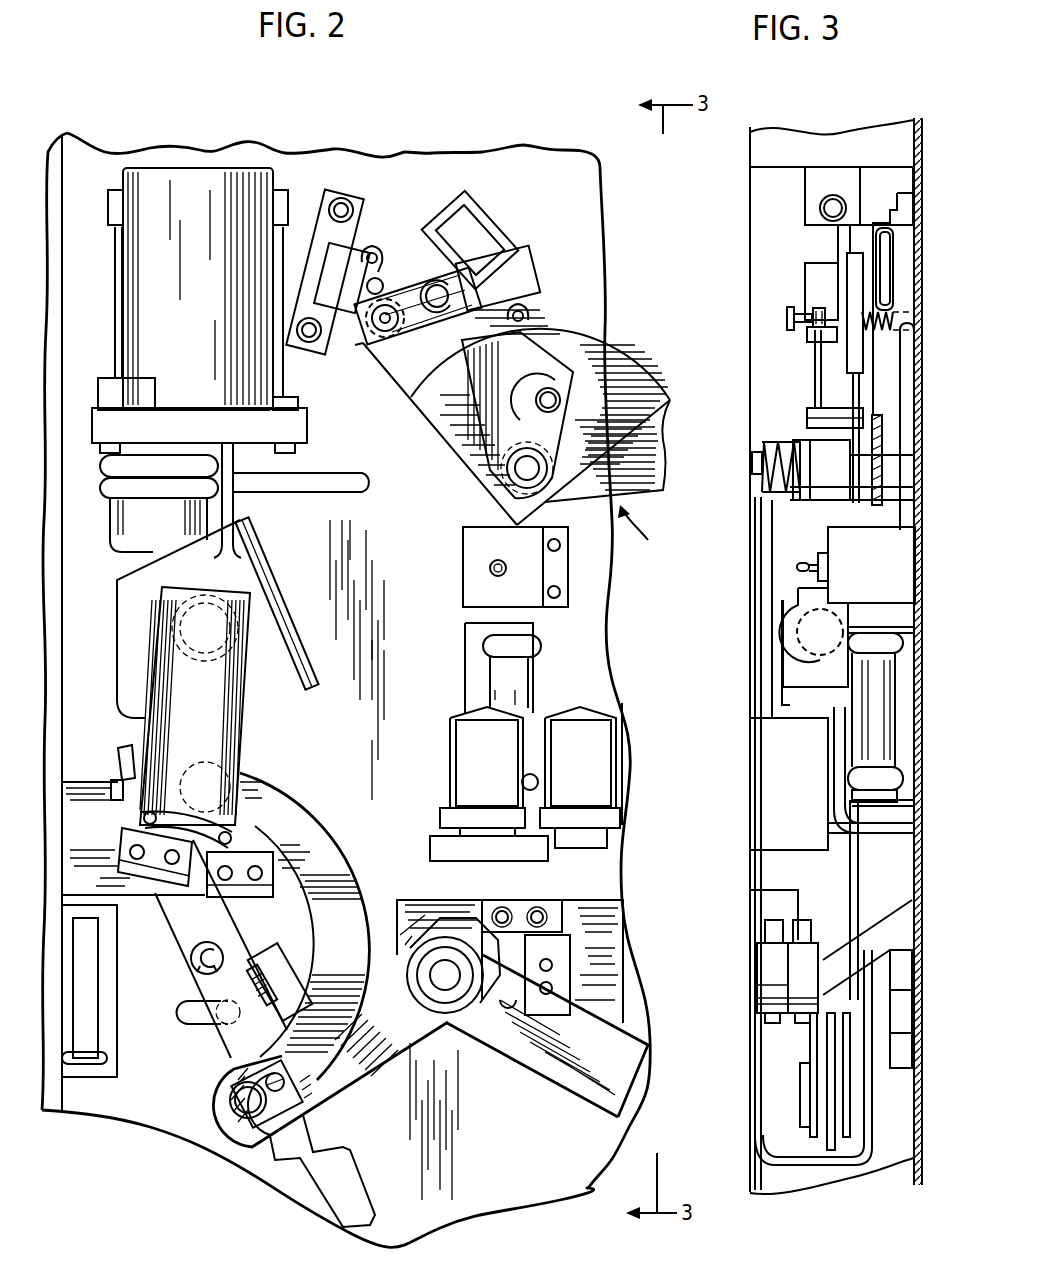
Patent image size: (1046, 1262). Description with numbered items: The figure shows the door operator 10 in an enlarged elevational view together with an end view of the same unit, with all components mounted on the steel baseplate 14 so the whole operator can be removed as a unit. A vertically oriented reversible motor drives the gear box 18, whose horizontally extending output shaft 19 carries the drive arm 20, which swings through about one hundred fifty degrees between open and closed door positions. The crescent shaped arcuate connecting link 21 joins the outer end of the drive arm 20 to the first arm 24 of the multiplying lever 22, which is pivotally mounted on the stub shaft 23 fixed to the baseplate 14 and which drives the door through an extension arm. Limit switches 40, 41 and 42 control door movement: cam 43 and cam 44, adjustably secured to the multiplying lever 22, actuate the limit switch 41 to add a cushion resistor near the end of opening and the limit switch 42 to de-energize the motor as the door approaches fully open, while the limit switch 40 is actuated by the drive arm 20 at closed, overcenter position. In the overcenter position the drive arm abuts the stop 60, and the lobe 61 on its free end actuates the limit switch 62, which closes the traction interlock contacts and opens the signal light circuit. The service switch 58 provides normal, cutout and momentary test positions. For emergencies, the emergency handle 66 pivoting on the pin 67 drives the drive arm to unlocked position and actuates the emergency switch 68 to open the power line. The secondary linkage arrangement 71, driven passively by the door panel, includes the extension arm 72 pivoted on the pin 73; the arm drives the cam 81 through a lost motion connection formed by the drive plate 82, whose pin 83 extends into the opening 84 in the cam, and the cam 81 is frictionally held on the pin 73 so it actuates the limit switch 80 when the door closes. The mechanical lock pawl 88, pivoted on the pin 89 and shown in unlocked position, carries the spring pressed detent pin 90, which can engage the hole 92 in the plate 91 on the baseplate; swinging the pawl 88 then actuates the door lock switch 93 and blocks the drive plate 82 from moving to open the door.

In FIG. 3, the door operator 10 is at (832, 116).
In FIG. 2, the baseplate 14 is at (532, 1182).
In FIG. 3, the baseplate 14 is at (912, 559).
In FIG. 2, the gear box 18 is at (285, 680).
In FIG. 2, the output shaft 19 is at (250, 633).
In FIG. 2, the drive arm 20 is at (228, 735).
In FIG. 2, the arcuate connecting link 21 is at (320, 848).
In FIG. 2, the multiplying lever 22 is at (521, 1065).
In FIG. 2, the stub shaft 23 is at (445, 985).
In FIG. 2, the first arm 24 is at (360, 1073).
In FIG. 2, the limit switch 40 is at (157, 862).
In FIG. 2, the limit switch 41 is at (555, 975).
In FIG. 3, the limit switch 41 is at (760, 1000).
In FIG. 2, the limit switch 42 is at (526, 973).
In FIG. 3, the limit switch 42 is at (800, 1020).
In FIG. 2, the cam 43 is at (432, 920).
In FIG. 2, the cam 44 is at (440, 935).
In FIG. 2, the service switch 58 is at (492, 572).
In FIG. 3, the service switch 58 is at (818, 555).
In FIG. 2, the stop 60 is at (128, 755).
In FIG. 2, the lobe 61 is at (214, 829).
In FIG. 2, the limit switch 62 is at (240, 878).
In FIG. 2, the emergency handle 66 is at (358, 1158).
In FIG. 2, the pin 67 is at (202, 958).
In FIG. 2, the emergency switch 68 is at (236, 1056).
In FIG. 2, the secondary linkage arrangement 71 is at (639, 530).
In FIG. 2, the extension arm 72 is at (647, 490).
In FIG. 2, the pin 73 is at (515, 472).
In FIG. 2, the limit switch 80 is at (513, 290).
In FIG. 3, the limit switch 80 is at (810, 283).
In FIG. 2, the cam 81 is at (478, 385).
In FIG. 3, the cam 81 is at (815, 393).
In FIG. 2, the drive plate 82 is at (625, 370).
In FIG. 3, the drive plate 82 is at (847, 362).
In FIG. 2, the pin 83 is at (598, 338).
In FIG. 3, the pin 83 is at (840, 410).
In FIG. 2, the opening 84 is at (549, 390).
In FIG. 2, the lock pawl 88 is at (418, 322).
In FIG. 2, the pin 89 is at (445, 285).
In FIG. 2, the detent pin 90 is at (385, 338).
In FIG. 3, the detent pin 90 is at (788, 318).
In FIG. 2, the plate 91 is at (418, 395).
In FIG. 2, the hole 92 is at (377, 278).
In FIG. 2, the door lock switch 93 is at (345, 305).